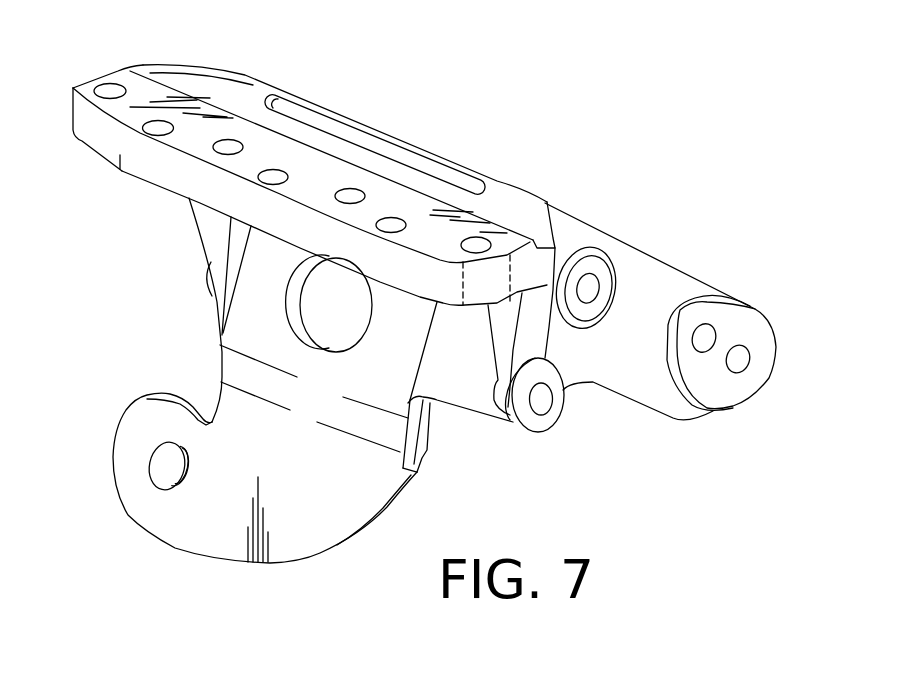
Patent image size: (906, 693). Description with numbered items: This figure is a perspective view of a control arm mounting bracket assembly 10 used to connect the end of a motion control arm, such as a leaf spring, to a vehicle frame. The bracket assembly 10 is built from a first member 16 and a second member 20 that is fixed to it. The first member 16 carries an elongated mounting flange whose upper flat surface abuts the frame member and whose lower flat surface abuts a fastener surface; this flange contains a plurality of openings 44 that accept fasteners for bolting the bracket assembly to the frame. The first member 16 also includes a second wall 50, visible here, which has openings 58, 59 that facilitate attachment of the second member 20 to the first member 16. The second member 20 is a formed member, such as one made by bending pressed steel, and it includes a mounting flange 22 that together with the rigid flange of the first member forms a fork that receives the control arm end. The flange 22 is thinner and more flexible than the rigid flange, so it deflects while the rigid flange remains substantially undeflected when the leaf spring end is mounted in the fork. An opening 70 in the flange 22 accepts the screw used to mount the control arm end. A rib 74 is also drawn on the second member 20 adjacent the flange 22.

The bracket assembly 10 is at (512, 148).
The first member 16 is at (203, 80).
The openings 44 is at (155, 128).
The second member 20 is at (250, 327).
The mounting flange 22 is at (187, 523).
The opening 70 is at (160, 473).
The rib 74 is at (387, 431).
The second wall 50 is at (547, 333).
The opening 58 is at (543, 400).
The opening 59 is at (594, 283).